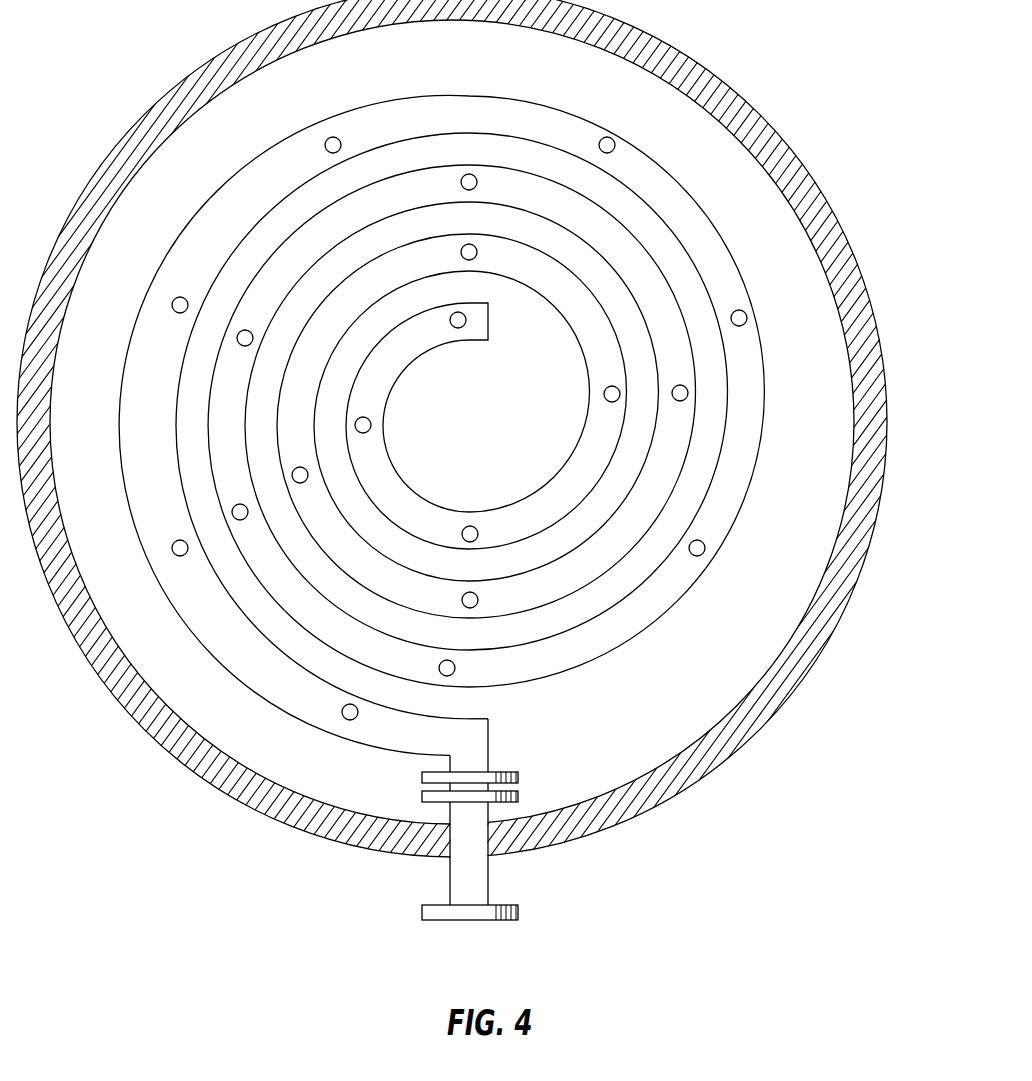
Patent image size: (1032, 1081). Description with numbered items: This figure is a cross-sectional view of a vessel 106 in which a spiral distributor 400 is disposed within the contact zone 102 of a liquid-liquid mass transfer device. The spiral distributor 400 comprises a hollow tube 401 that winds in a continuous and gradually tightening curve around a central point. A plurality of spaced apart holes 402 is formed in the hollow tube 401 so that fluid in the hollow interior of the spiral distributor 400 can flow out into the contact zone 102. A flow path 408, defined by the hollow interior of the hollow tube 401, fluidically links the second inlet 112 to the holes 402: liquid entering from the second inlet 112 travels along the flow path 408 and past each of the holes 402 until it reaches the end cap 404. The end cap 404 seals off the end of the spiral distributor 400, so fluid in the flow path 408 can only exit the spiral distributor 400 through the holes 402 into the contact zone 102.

The vessel 106 is at (849, 243).
The contact zone 102 is at (749, 190).
The spiral distributor 400 is at (684, 170).
The hollow tube 401 is at (767, 395).
The holes 402 is at (608, 136).
The end cap 404 is at (489, 320).
The flow path 408 is at (374, 735).
The second inlet 112 is at (468, 925).